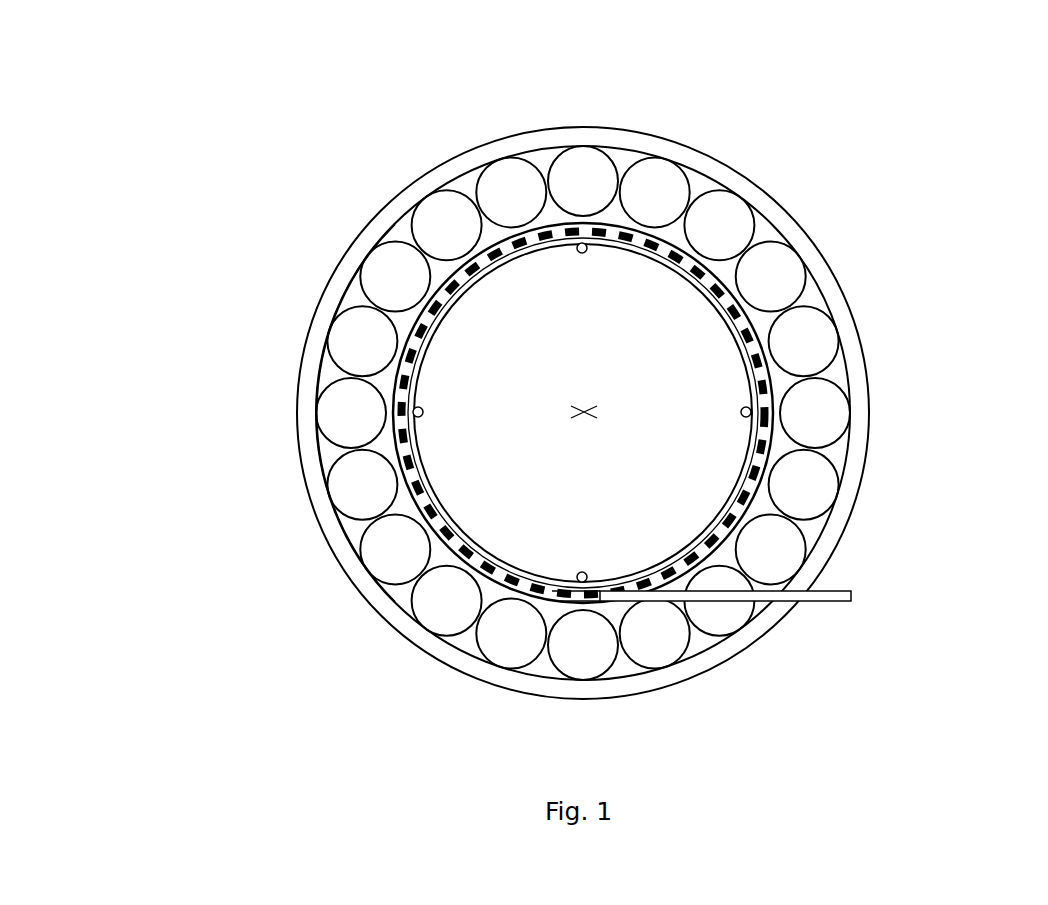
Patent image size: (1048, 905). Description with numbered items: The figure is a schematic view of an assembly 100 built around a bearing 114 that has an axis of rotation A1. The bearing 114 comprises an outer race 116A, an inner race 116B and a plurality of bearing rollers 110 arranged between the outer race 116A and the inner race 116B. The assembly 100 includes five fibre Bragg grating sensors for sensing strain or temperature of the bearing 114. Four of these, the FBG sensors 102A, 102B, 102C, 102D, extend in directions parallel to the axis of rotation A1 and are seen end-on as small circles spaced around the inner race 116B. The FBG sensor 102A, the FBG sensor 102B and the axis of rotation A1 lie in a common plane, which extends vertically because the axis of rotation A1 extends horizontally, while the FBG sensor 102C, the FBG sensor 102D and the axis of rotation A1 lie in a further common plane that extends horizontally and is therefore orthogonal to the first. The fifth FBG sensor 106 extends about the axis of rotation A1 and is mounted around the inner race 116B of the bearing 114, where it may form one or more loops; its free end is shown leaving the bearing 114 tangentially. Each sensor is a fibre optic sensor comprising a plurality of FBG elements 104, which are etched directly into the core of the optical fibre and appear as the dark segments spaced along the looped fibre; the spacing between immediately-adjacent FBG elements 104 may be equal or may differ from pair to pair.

The assembly 100 is at (184, 103).
The bearing rollers 110 is at (313, 412).
The FBG elements 104 is at (765, 447).
The bearing 114 is at (347, 573).
The outer race 116A is at (368, 580).
The inner race 116B is at (443, 565).
The FBG sensor 106 is at (818, 602).
The FBG sensor 102A is at (582, 254).
The FBG sensor 102B is at (582, 571).
The FBG sensor 102C is at (741, 412).
The FBG sensor 102D is at (423, 413).
The axis of rotation A1 is at (585, 396).